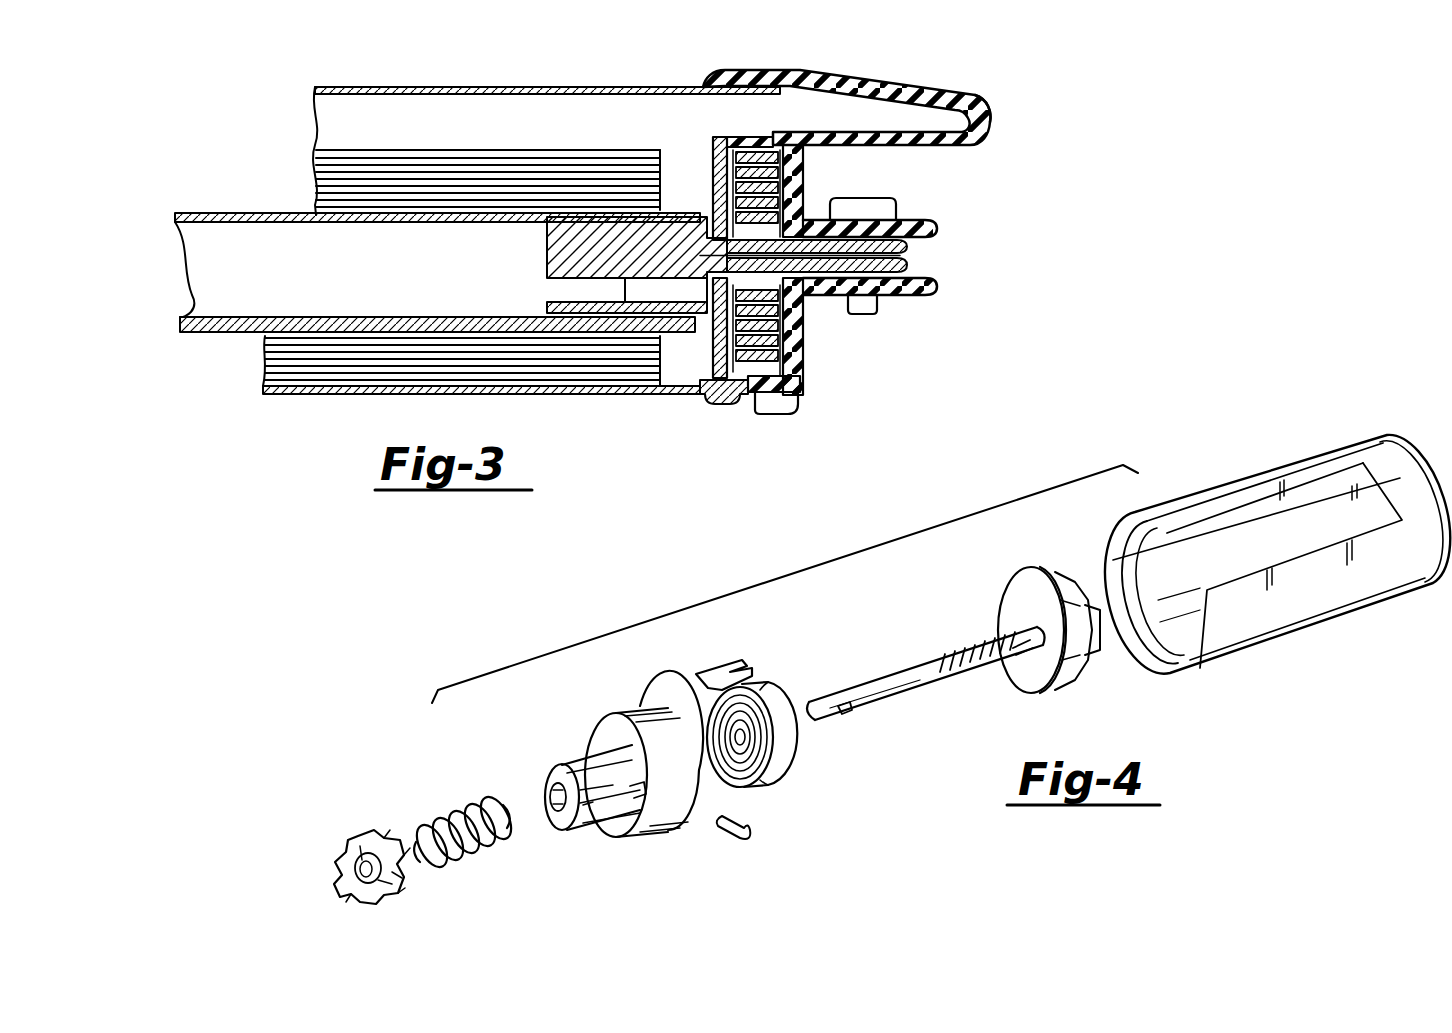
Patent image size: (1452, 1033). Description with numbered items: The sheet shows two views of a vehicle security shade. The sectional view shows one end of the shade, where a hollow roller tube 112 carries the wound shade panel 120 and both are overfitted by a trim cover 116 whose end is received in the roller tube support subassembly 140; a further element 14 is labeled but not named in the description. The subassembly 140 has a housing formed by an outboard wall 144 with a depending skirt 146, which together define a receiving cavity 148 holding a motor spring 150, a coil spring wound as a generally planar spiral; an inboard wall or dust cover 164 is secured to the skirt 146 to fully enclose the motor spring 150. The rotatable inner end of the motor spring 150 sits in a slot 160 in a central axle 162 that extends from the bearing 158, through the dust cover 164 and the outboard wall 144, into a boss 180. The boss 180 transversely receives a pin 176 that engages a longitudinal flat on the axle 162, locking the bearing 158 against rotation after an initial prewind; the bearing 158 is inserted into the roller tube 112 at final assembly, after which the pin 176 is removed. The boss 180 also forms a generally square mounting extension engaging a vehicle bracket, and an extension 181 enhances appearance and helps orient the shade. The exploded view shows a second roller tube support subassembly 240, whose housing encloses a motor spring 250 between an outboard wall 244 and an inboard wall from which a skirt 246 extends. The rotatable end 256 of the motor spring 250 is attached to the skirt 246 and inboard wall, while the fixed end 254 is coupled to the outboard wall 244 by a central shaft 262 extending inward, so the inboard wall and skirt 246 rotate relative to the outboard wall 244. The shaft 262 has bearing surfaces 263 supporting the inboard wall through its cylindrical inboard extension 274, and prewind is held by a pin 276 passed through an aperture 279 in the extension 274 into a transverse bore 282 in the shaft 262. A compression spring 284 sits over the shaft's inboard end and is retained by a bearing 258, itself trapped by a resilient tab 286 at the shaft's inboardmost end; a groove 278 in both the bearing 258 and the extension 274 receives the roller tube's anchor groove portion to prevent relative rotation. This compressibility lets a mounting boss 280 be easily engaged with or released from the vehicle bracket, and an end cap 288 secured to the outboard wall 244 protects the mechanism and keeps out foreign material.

In FIG. 3, the cap 14 is at (752, 72).
In FIG. 3, the roller tube 112 is at (230, 335).
In FIG. 3, the trim cover 116 is at (400, 87).
In FIG. 3, the shade panel 120 is at (500, 150).
In FIG. 3, the roller tube support subassembly 140 is at (782, 416).
In FIG. 3, the outboard wall 144 is at (803, 322).
In FIG. 3, the skirt 146 is at (772, 150).
In FIG. 3, the receiving cavity 148 is at (775, 137).
In FIG. 3, the motor spring 150 is at (775, 380).
In FIG. 3, the bearing 158 is at (655, 225).
In FIG. 3, the slot 160 is at (905, 262).
In FIG. 3, the central axle 162 is at (905, 250).
In FIG. 3, the dust cover 164 is at (710, 360).
In FIG. 3, the pin 176 is at (895, 205).
In FIG. 3, the boss 180 is at (915, 288).
In FIG. 3, the extension 181 is at (955, 98).
In FIG. 4, the roller tube support subassembly 240 is at (793, 574).
In FIG. 4, the outboard wall 244 is at (1020, 600).
In FIG. 4, the skirt 246 is at (655, 725).
In FIG. 4, the motor spring 250 is at (788, 770).
In FIG. 4, the fixed end 254 is at (762, 765).
In FIG. 4, the rotatable end 256 is at (713, 664).
In FIG. 4, the bearing 258 is at (376, 833).
In FIG. 4, the central shaft 262 is at (905, 692).
In FIG. 4, the bearing surfaces 263 is at (972, 650).
In FIG. 4, the cylindrical inboard extension 274 is at (585, 760).
In FIG. 4, the pin 276 is at (748, 838).
In FIG. 4, the groove 278 is at (400, 880).
In FIG. 4, the aperture 279 is at (640, 798).
In FIG. 4, the mounting boss 280 is at (1105, 645).
In FIG. 4, the bore 282 is at (1012, 662).
In FIG. 4, the compression spring 284 is at (468, 844).
In FIG. 4, the resilient tab 286 is at (848, 708).
In FIG. 4, the end cap 288 is at (1312, 612).